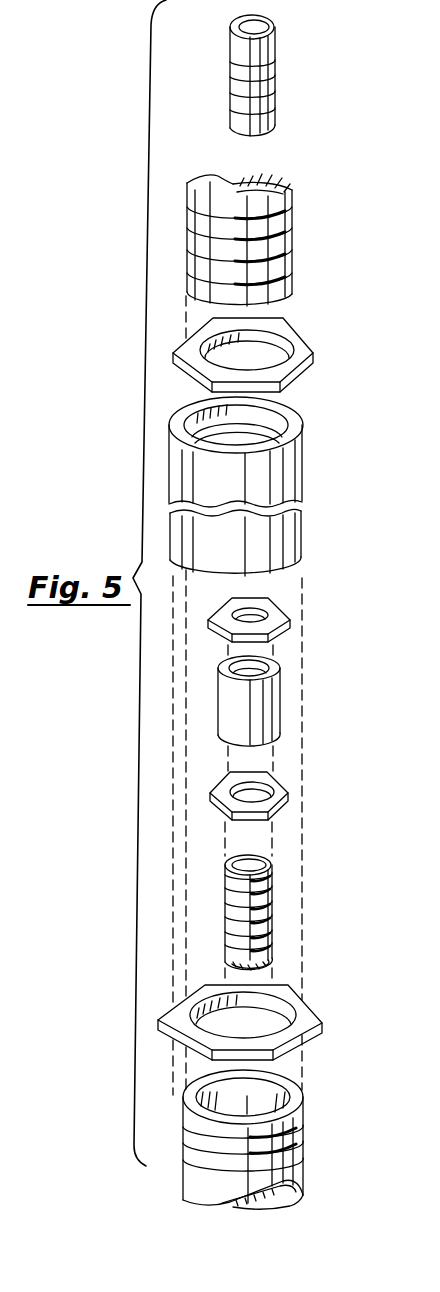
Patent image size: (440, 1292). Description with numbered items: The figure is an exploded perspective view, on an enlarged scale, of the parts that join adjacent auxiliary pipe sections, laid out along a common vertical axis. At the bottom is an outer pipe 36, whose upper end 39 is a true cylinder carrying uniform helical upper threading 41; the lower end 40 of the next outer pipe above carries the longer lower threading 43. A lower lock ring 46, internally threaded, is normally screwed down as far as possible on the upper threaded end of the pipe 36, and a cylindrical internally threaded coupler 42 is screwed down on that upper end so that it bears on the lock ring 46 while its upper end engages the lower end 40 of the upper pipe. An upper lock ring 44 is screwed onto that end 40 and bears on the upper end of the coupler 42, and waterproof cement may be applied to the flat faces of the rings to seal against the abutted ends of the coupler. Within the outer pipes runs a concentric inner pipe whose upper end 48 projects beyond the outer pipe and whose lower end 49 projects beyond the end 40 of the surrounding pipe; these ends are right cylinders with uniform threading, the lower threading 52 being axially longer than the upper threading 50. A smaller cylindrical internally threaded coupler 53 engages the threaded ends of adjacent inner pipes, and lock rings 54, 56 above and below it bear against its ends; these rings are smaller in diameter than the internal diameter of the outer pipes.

The outer pipe 36 is at (227, 1139).
The upper end of outer pipe 39 is at (303, 1155).
The lower end of outer pipe 40 is at (294, 191).
The upper threading 41 is at (300, 1129).
The coupler 42 is at (285, 480).
The lower threading 43 is at (288, 296).
The upper lock ring 44 is at (300, 352).
The lower lock ring 46 is at (307, 1013).
The upper end of inner pipe 48 is at (257, 948).
The lower end of inner pipe 49 is at (270, 88).
The upper threading of inner pipe 50 is at (275, 885).
The lower threading of inner pipe 52 is at (272, 124).
The inner pipe coupler 53 is at (253, 710).
The upper lock ring for inner pipe 54 is at (277, 614).
The lower lock ring for inner pipe 56 is at (283, 793).